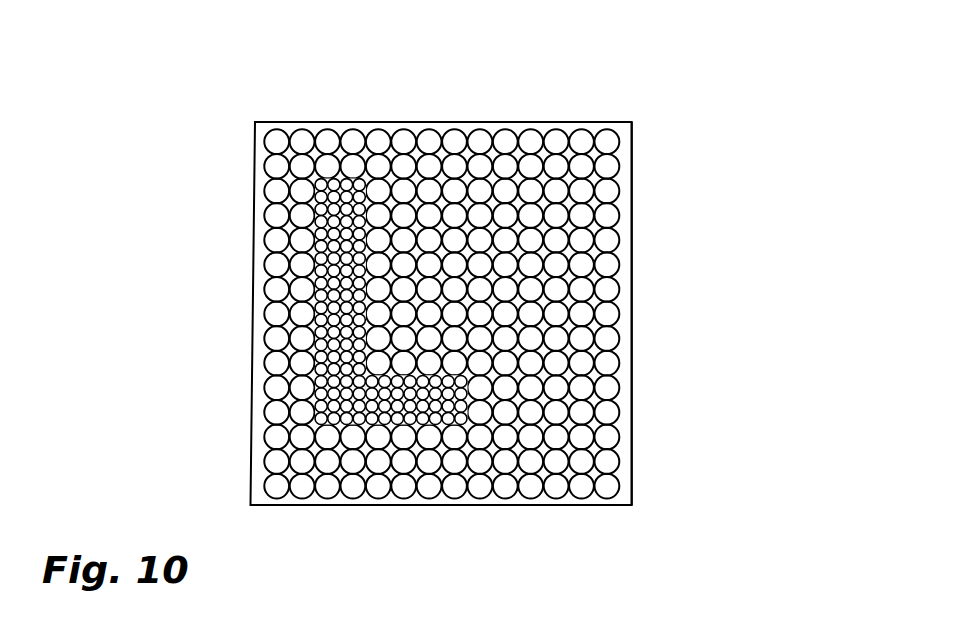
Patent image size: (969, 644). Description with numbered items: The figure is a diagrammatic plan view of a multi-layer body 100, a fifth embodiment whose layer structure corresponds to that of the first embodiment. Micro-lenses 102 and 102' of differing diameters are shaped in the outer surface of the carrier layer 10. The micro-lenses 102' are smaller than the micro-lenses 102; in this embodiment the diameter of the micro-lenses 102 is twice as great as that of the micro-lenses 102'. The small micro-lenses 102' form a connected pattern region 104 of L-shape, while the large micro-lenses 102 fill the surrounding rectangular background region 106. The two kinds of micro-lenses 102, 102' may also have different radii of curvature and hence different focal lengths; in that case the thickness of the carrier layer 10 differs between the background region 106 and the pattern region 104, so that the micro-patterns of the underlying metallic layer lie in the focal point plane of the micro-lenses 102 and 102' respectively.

The multi-layer body 100 is at (690, 98).
The carrier layer 10 is at (550, 124).
The micro-lenses 102 is at (441, 272).
The micro-lenses 102' is at (320, 364).
The pattern region 104 is at (373, 434).
The background region 106 is at (642, 275).